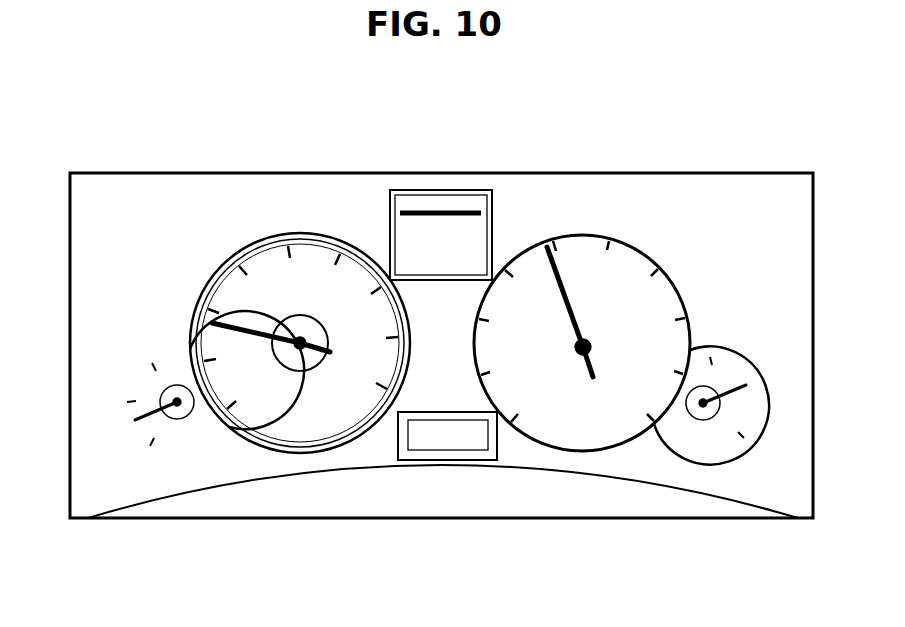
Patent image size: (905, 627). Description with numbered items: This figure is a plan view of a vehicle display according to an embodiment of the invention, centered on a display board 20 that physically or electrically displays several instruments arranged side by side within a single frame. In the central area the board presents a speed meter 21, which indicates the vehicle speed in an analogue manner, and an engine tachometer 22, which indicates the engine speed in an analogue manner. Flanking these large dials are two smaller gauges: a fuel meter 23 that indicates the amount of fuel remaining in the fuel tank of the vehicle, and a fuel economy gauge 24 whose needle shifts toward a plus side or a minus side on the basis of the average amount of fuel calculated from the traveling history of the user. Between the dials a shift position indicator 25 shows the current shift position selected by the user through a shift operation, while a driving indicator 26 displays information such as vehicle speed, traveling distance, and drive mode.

The display board 20 is at (597, 205).
The speed meter 21 is at (642, 258).
The engine tachometer 22 is at (330, 236).
The fuel meter 23 is at (762, 362).
The fuel economy gauge 24 is at (120, 385).
The shift position indicator 25 is at (436, 460).
The driving indicator 26 is at (437, 190).